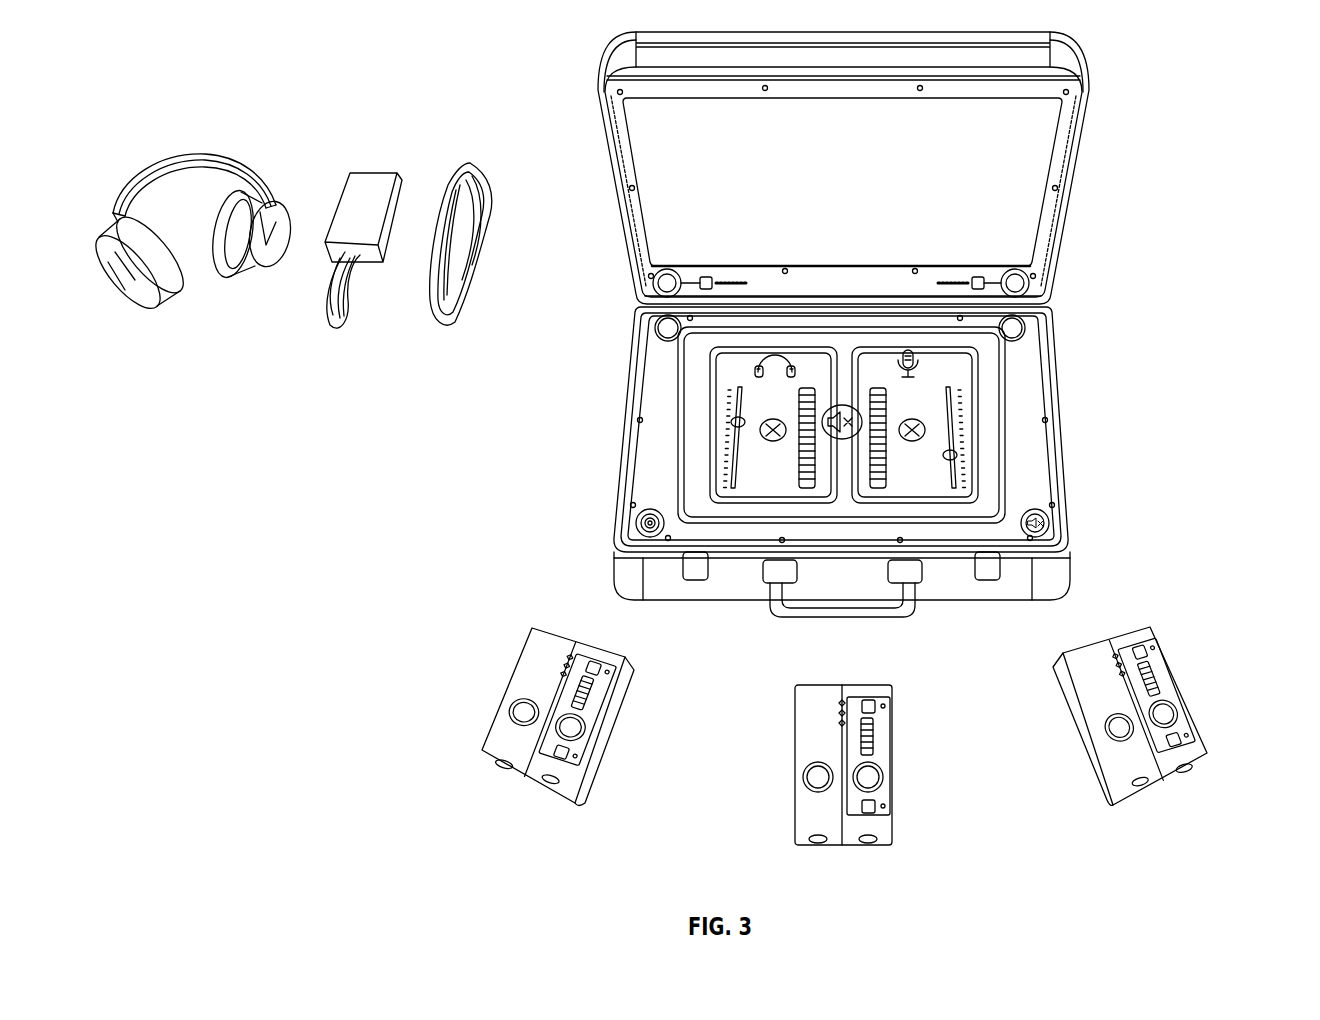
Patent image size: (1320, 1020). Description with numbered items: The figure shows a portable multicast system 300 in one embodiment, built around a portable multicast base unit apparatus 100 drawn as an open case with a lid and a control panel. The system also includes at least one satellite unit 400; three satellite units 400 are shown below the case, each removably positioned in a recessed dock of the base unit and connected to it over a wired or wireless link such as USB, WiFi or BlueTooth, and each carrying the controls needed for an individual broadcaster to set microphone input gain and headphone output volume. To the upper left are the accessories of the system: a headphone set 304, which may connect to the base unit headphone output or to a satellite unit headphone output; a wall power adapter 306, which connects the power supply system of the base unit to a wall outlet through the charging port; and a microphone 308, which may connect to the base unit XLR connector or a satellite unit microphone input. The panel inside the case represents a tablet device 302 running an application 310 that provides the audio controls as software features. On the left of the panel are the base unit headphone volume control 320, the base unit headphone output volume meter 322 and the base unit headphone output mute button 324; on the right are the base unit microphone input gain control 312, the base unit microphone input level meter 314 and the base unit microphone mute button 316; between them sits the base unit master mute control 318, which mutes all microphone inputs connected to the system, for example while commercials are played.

The portable multicast base unit apparatus 100 is at (598, 87).
The portable multicast system 300 is at (1222, 80).
The tablet device 302 is at (685, 492).
The headphone set 304 is at (180, 157).
The wall power adapter 306 is at (353, 173).
The microphone 308 is at (467, 165).
The application 310 is at (977, 365).
The base unit microphone input gain control 312 is at (947, 387).
The base unit microphone input level meter 314 is at (878, 388).
The base unit microphone mute button 316 is at (912, 441).
The base unit master mute control 318 is at (842, 439).
The base unit headphone volume control 320 is at (743, 387).
The base unit headphone output volume meter 322 is at (808, 388).
The base unit headphone output mute button 324 is at (773, 441).
The satellite unit 400 is at (517, 673).